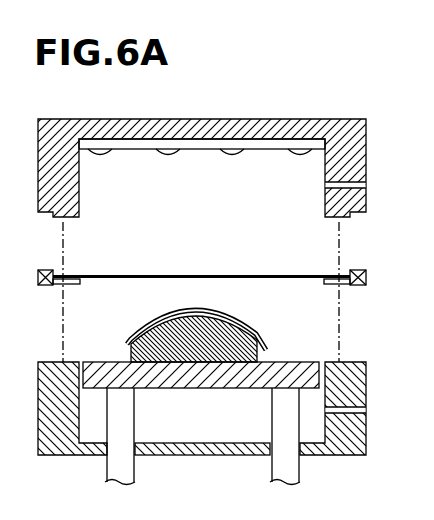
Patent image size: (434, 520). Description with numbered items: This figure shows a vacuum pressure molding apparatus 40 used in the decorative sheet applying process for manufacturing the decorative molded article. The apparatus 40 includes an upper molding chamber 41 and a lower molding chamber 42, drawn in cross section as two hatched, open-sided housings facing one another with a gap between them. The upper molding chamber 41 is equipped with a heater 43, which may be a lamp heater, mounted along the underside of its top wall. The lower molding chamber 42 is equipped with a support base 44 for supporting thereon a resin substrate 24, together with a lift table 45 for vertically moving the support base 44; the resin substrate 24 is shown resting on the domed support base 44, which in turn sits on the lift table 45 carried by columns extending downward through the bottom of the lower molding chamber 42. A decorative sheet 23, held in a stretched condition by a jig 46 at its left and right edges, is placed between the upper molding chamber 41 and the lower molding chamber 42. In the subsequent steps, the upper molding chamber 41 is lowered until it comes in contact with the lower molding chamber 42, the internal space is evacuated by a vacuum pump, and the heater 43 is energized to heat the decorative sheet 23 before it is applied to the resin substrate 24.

The vacuum pressure molding apparatus 40 is at (299, 100).
The upper molding chamber 41 is at (207, 118).
The lower molding chamber 42 is at (350, 456).
The heater 43 is at (232, 156).
The support base 44 is at (247, 334).
The lift table 45 is at (200, 389).
The jig 46 is at (367, 278).
The decorative sheet 23 is at (165, 274).
The resin substrate 24 is at (129, 337).